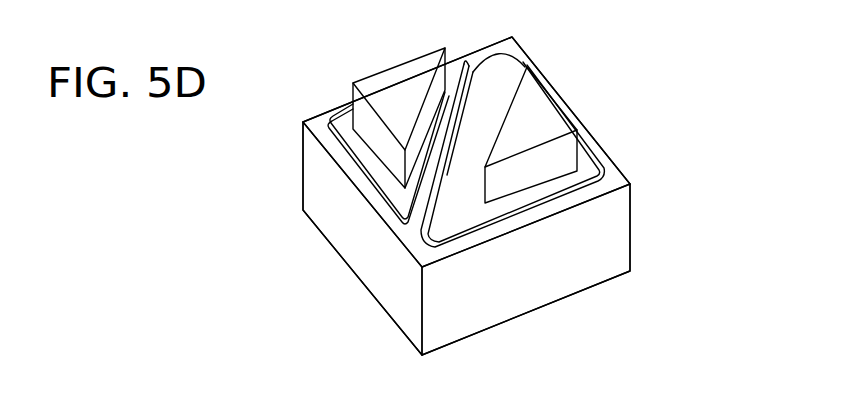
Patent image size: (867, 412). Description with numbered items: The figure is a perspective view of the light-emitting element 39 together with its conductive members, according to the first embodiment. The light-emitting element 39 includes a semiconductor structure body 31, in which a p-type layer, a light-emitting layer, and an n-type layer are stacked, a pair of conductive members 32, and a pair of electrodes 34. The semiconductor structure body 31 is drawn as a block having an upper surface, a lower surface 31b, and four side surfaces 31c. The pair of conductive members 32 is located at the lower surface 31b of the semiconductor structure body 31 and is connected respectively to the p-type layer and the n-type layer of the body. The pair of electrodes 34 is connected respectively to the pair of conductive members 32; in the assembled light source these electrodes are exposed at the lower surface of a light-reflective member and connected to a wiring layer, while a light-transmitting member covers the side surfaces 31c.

The semiconductor structure body 31 is at (597, 253).
The lower surface 31b is at (613, 173).
The side surfaces 31c is at (360, 252).
The conductive members 32 is at (428, 150).
The electrodes 34 is at (390, 88).
The light-emitting element 39 is at (664, 72).